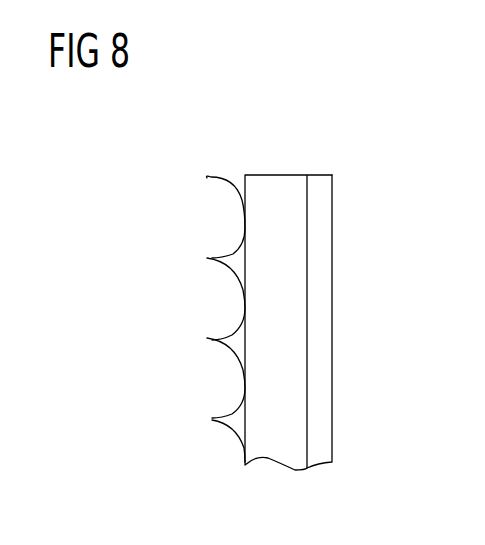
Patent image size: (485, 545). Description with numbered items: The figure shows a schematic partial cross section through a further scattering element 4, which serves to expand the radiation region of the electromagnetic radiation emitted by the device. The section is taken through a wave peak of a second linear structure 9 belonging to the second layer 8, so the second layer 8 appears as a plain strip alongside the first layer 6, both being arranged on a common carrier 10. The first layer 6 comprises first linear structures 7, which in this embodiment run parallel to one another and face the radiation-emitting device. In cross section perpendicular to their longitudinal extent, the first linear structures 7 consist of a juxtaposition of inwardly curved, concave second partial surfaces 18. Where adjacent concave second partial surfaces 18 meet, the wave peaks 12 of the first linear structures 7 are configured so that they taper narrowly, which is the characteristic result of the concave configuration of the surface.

The scattering element 4 is at (237, 148).
The first layer 6 is at (150, 208).
The first linear structures 7 is at (222, 170).
The second layer 8 is at (342, 208).
The second linear structures 9 is at (327, 178).
The carrier 10 is at (282, 182).
The wave peaks 12 is at (212, 337).
The second partial surfaces 18 is at (245, 228).